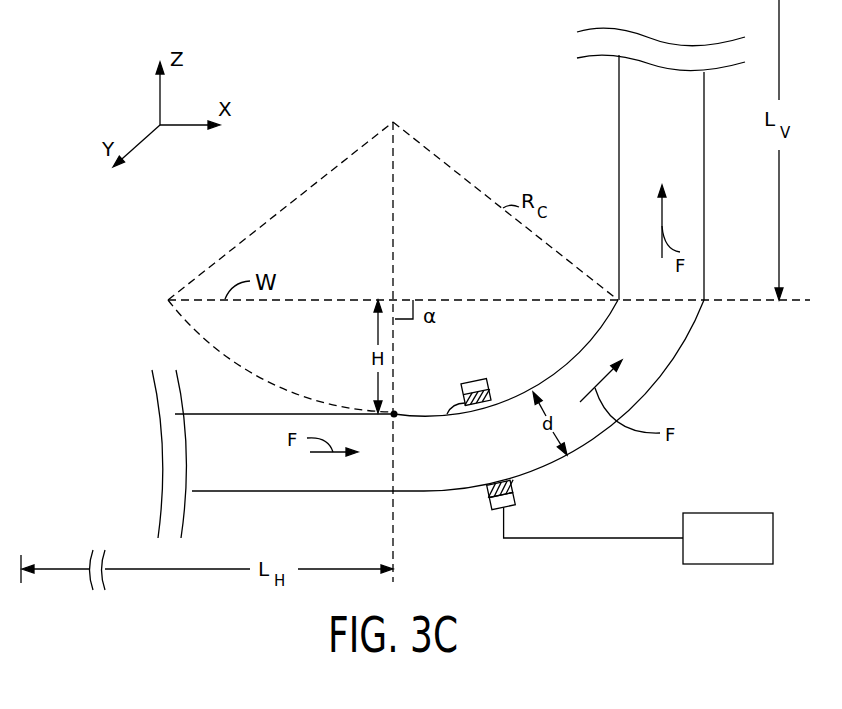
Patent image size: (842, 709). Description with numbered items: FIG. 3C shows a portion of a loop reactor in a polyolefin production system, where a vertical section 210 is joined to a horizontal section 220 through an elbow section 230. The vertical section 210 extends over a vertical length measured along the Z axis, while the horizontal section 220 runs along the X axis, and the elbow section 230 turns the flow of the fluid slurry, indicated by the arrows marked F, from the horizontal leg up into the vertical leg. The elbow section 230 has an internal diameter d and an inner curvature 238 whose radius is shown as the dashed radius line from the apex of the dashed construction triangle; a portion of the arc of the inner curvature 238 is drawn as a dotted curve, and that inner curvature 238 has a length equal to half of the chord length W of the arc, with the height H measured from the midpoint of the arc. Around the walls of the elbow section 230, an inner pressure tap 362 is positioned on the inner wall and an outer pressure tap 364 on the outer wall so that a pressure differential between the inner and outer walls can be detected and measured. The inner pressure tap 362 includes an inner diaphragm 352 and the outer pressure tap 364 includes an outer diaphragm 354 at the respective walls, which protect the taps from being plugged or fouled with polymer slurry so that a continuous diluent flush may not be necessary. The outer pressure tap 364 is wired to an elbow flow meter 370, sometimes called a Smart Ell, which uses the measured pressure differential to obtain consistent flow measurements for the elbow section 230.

The vertical section 210 is at (641, 128).
The horizontal section 220 is at (255, 478).
The elbow section 230 is at (657, 353).
The inner curvature 238 is at (565, 367).
The inner diaphragm 352 is at (445, 416).
The outer diaphragm 354 is at (513, 487).
The inner pressure tap 362 is at (470, 384).
The outer pressure tap 364 is at (515, 498).
The elbow flow meter 370 is at (748, 553).